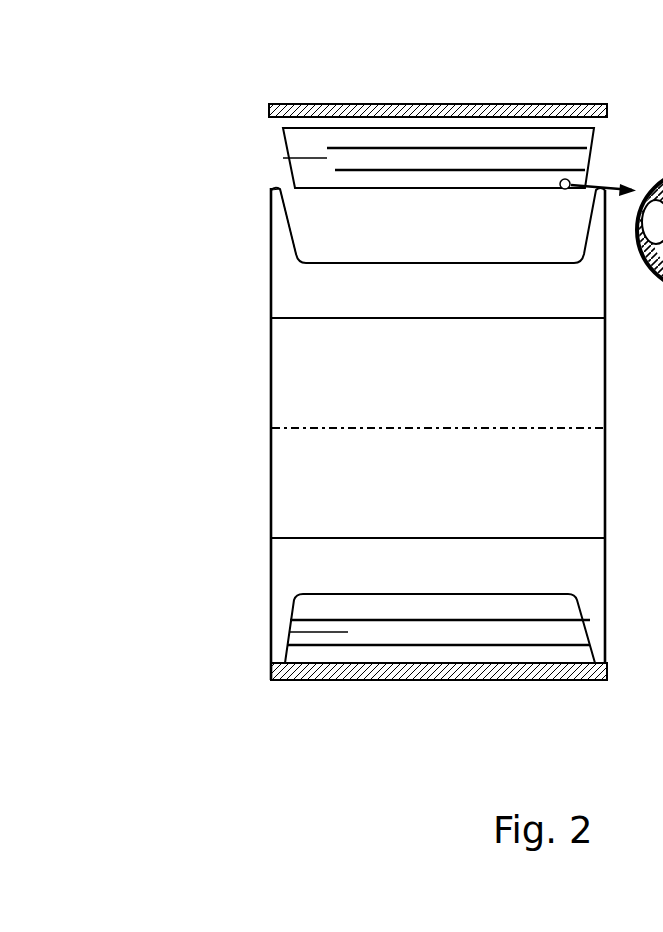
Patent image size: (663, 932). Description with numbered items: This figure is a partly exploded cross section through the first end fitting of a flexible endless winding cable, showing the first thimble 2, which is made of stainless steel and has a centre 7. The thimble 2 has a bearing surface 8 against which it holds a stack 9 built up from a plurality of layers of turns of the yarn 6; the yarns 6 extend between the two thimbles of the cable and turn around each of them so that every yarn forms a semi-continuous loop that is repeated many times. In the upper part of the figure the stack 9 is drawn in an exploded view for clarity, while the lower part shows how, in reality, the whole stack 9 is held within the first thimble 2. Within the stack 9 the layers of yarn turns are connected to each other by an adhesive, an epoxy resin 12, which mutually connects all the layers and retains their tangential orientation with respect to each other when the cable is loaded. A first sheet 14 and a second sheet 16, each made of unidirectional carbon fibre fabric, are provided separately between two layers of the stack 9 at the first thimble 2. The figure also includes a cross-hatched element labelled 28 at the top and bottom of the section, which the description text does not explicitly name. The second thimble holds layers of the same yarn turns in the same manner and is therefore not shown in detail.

The first thimble 2 is at (225, 115).
The end plate 28 is at (412, 104).
The second sheet 16 is at (327, 148).
The yarns 6 is at (202, 397).
The epoxy resin 12 is at (283, 158).
The first sheet 14 is at (335, 170).
The stack 9 is at (262, 190).
The bearing surface 8 is at (338, 258).
The centre 7 is at (397, 420).